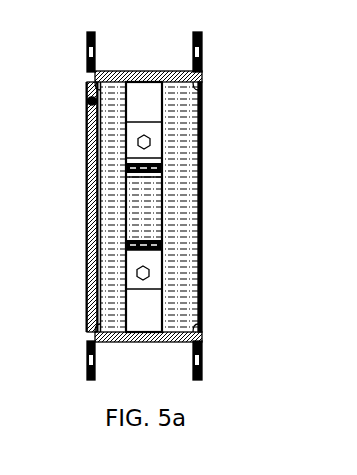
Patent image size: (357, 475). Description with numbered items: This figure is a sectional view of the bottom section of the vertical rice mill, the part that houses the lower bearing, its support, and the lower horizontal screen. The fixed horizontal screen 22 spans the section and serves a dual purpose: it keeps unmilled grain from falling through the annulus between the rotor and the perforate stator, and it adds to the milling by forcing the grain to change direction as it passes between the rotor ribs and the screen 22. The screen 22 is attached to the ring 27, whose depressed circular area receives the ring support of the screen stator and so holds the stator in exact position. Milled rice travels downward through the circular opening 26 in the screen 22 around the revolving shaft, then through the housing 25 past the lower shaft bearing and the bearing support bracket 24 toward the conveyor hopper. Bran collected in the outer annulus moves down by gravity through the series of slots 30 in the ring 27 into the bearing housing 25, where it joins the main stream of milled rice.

The horizontal screen 22 is at (90, 140).
The bearing support bracket 24 is at (155, 150).
The housing 25 is at (187, 206).
The circular opening 26 is at (89, 203).
The ring 27 is at (92, 102).
The slots 30 is at (88, 323).